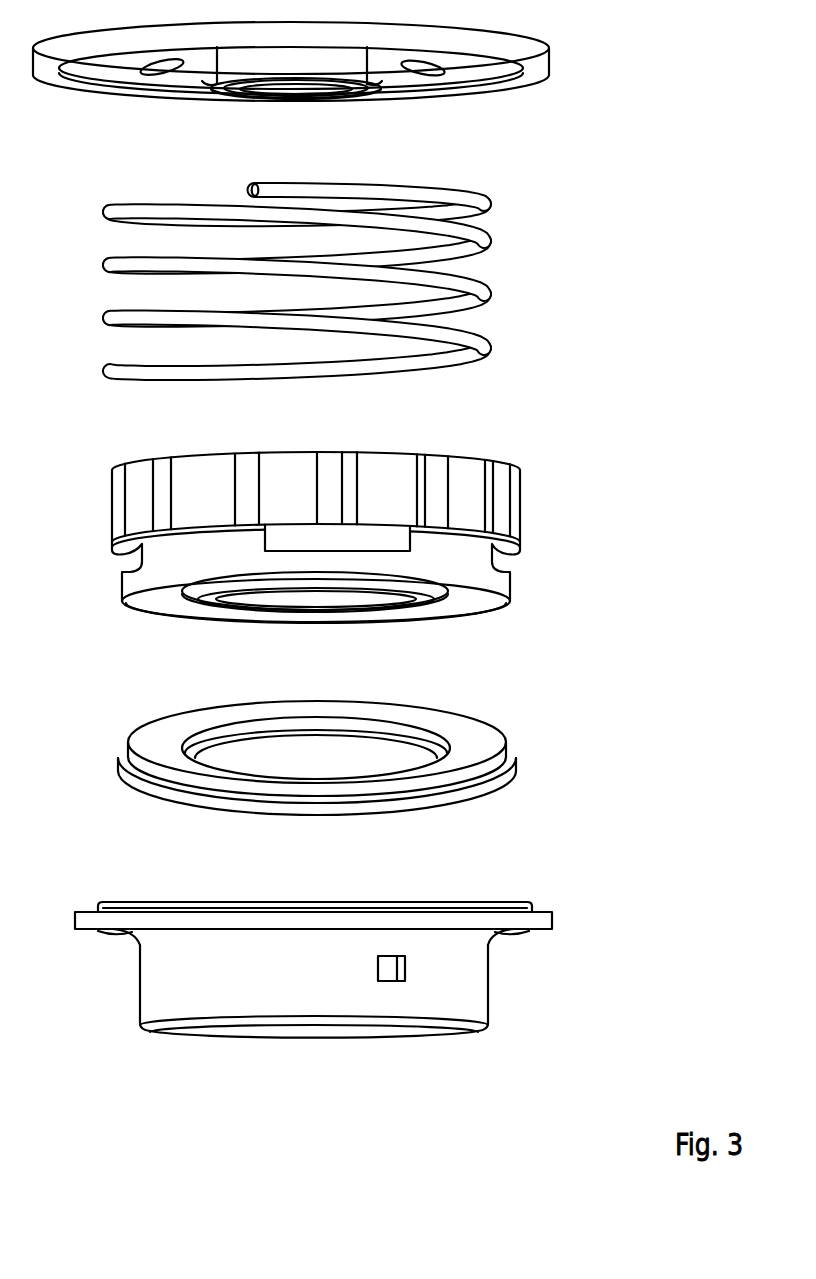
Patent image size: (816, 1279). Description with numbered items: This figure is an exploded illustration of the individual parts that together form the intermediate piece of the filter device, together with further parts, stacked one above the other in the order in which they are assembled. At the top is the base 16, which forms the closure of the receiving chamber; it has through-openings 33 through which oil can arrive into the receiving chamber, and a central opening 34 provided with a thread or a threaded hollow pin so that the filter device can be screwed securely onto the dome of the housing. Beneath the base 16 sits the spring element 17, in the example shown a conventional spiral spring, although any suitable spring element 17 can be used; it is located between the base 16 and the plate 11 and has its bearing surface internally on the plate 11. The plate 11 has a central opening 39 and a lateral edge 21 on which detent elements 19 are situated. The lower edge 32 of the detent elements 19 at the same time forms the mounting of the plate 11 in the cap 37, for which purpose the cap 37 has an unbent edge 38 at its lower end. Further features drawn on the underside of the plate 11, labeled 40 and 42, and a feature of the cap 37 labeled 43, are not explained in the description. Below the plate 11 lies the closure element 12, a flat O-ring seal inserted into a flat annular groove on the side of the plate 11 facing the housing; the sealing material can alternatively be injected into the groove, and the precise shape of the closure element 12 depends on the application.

The plate 11 is at (352, 528).
The closure element 12 is at (516, 766).
The base 16 is at (558, 57).
The spring element 17 is at (490, 296).
The detent elements 19 is at (339, 466).
The lateral edge 21 is at (465, 484).
The lower edge 32 is at (512, 548).
The through-openings 33 is at (430, 72).
The central opening 34 is at (306, 95).
The cap 37 is at (317, 1009).
The unbent edge 38 is at (472, 1030).
The central opening 39 is at (326, 601).
The inner ring of cap 40 is at (387, 540).
The outer bottom ring of cap 42 is at (163, 601).
The housing flange 43 is at (112, 931).